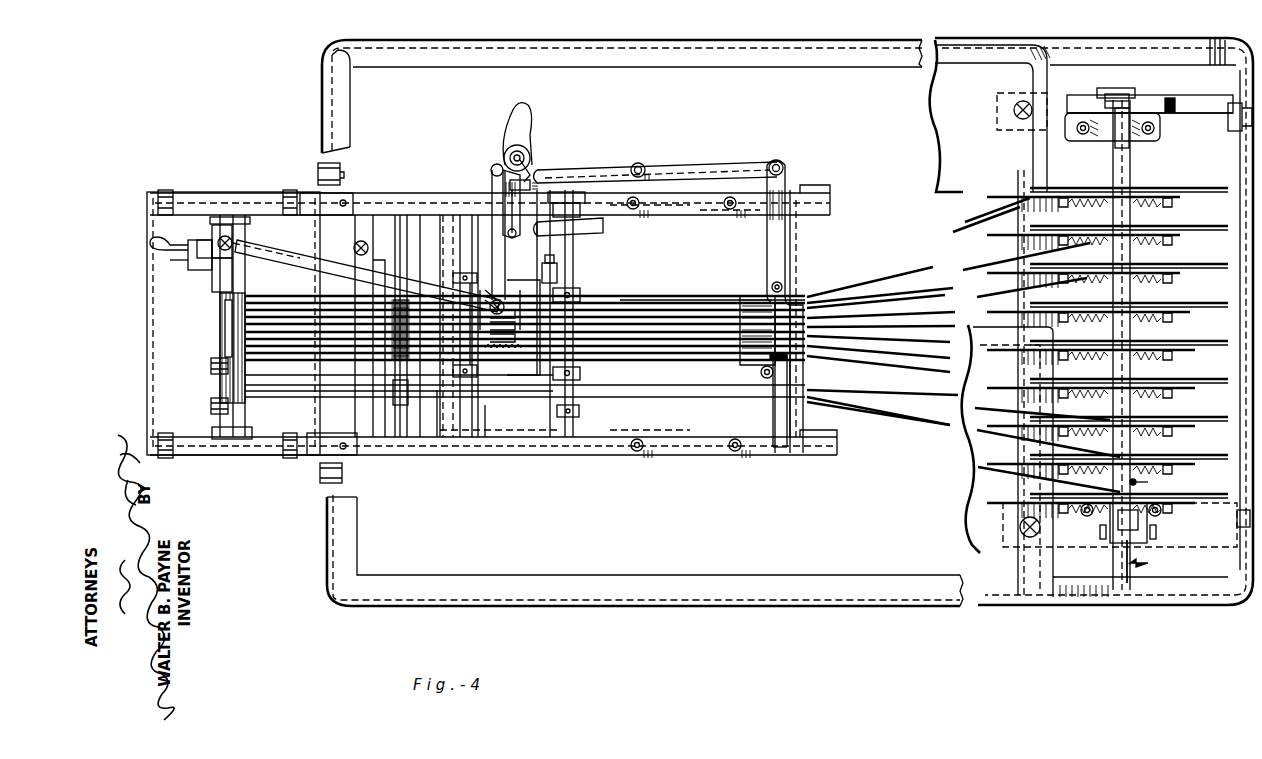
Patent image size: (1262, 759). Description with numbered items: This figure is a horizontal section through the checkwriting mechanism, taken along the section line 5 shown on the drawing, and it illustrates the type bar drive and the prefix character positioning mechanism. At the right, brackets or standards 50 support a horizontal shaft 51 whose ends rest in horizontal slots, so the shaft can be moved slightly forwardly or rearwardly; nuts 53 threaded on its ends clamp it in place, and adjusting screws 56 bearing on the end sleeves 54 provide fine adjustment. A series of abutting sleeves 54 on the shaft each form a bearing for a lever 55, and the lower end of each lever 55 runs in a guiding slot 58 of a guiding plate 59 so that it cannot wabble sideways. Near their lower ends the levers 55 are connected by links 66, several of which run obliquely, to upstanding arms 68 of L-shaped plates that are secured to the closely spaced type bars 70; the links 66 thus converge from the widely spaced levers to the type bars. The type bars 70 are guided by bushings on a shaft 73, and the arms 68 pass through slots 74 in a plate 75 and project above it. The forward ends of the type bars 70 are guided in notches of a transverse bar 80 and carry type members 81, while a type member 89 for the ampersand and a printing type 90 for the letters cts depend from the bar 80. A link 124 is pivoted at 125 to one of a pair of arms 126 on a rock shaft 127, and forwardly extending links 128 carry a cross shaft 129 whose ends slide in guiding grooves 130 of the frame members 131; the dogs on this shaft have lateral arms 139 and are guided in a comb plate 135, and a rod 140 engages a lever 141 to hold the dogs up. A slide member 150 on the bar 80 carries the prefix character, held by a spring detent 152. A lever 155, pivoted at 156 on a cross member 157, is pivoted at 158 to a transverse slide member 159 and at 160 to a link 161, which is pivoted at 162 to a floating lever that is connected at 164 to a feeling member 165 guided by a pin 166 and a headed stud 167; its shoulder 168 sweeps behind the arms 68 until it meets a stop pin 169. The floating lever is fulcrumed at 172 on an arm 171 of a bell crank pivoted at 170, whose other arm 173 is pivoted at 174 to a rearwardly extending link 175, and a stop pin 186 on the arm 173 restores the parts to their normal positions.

The section line 5 is at (1144, 528).
The brackets or standards 50 is at (1177, 103).
The horizontal shaft 51 is at (1115, 145).
The nuts 53 is at (1117, 98).
The sleeves 54 is at (1128, 170).
The levers 55 is at (1182, 187).
The adjusting screws 56 is at (1093, 130).
The guiding slot 58 is at (1215, 187).
The guiding plate 59 is at (1017, 208).
The links 66 is at (887, 277).
The upstanding arms 68 is at (750, 297).
The type bars 70 is at (890, 300).
The shaft 73 is at (410, 260).
The slots 74 is at (677, 300).
The plate 75 is at (607, 272).
The transverse bar 80 is at (237, 280).
The type members 81 is at (283, 298).
The type member 89 is at (211, 366).
The printing type 90 is at (211, 405).
The link 124 is at (580, 265).
The pivot 125 is at (552, 260).
The arms 126 is at (570, 283).
The rock shaft 127 is at (572, 417).
The links 128 is at (516, 402).
The cross shaft 129 is at (472, 405).
The guiding grooves 130 is at (477, 200).
The frame members 131 is at (427, 200).
The comb plate 135 is at (526, 321).
The lateral arm 139 is at (511, 293).
The rod or bar 140 is at (445, 405).
The lever 141 is at (421, 326).
The slide member 150 is at (200, 245).
The spring detent 152 is at (193, 262).
The lever 155 is at (303, 253).
The pivot 156 is at (373, 260).
The cross member 157 is at (354, 238).
The pivot 158 is at (233, 242).
The slide member 159 is at (266, 254).
The pivot 160 is at (493, 242).
The link 161 is at (483, 187).
The pivot 162 is at (500, 142).
The pivot 164 is at (780, 160).
The feeling member 165 is at (777, 240).
The pin 166 is at (790, 360).
The headed stud 167 is at (760, 372).
The shoulder 168 is at (793, 390).
The stop pin 169 is at (772, 287).
The bell crank pivot 170 is at (537, 140).
The arm 171 is at (575, 147).
The fulcrum 172 is at (640, 167).
The arm 173 is at (536, 185).
The pivot 174 is at (517, 230).
The link 175 is at (603, 232).
The stop pin 186 is at (517, 180).